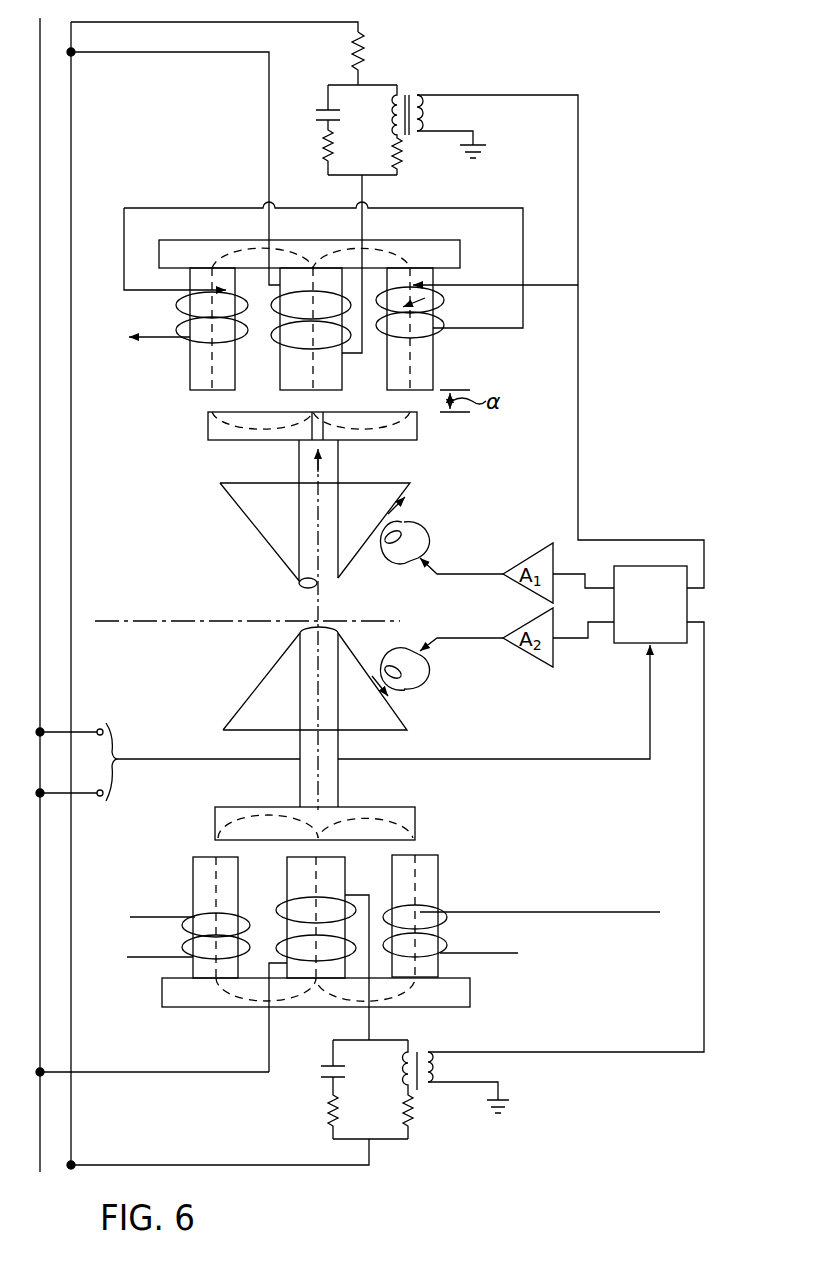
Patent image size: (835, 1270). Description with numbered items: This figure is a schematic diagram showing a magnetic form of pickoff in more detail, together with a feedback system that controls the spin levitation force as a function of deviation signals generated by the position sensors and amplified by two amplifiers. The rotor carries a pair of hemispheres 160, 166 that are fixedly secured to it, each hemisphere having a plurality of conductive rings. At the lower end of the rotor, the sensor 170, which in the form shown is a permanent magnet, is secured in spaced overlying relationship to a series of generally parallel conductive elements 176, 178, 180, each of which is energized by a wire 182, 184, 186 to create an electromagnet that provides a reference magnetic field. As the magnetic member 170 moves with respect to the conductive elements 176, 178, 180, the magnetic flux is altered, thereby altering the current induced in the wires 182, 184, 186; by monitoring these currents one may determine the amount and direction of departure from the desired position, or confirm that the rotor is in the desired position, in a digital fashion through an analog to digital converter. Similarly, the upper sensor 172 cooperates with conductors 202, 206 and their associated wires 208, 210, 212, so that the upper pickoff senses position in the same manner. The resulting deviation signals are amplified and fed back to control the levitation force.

The hemisphere 160 is at (262, 525).
The hemisphere 166 is at (258, 692).
The sensor 170 is at (412, 822).
The upper sensor 172 is at (412, 425).
The conductive element 176 is at (430, 875).
The conductive element 178 is at (340, 868).
The conductive element 180 is at (197, 872).
The wire 182 is at (512, 953).
The wire 184 is at (368, 1022).
The wire 186 is at (162, 916).
The conductor 202 is at (425, 367).
The conductor 206 is at (191, 386).
The wire 208 is at (442, 305).
The wire 210 is at (295, 340).
The wire 212 is at (160, 337).